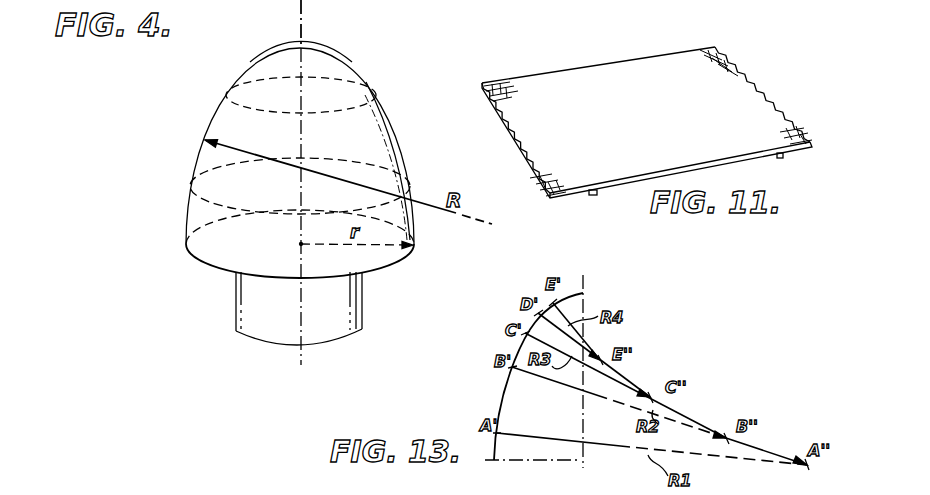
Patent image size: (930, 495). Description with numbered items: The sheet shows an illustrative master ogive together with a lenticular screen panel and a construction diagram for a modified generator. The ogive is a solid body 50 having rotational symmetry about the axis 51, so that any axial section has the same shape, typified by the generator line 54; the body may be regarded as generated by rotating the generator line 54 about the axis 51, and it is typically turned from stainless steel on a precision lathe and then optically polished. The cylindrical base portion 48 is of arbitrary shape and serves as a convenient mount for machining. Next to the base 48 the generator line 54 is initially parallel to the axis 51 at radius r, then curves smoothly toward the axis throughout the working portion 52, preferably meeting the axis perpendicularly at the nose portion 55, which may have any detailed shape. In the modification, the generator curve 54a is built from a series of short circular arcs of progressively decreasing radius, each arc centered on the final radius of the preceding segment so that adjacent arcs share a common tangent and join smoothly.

In FIG. 4, the cylindrical base portion 48 is at (352, 307).
In FIG. 4, the solid body 50 is at (416, 50).
In FIG. 4, the axis 51 is at (303, 21).
In FIG. 4, the working portion 52 is at (228, 93).
In FIG. 4, the generator line 54 is at (393, 125).
In FIG. 4, the nose portion 55 is at (273, 53).
In FIG. 13, the generator curve 54a is at (500, 386).